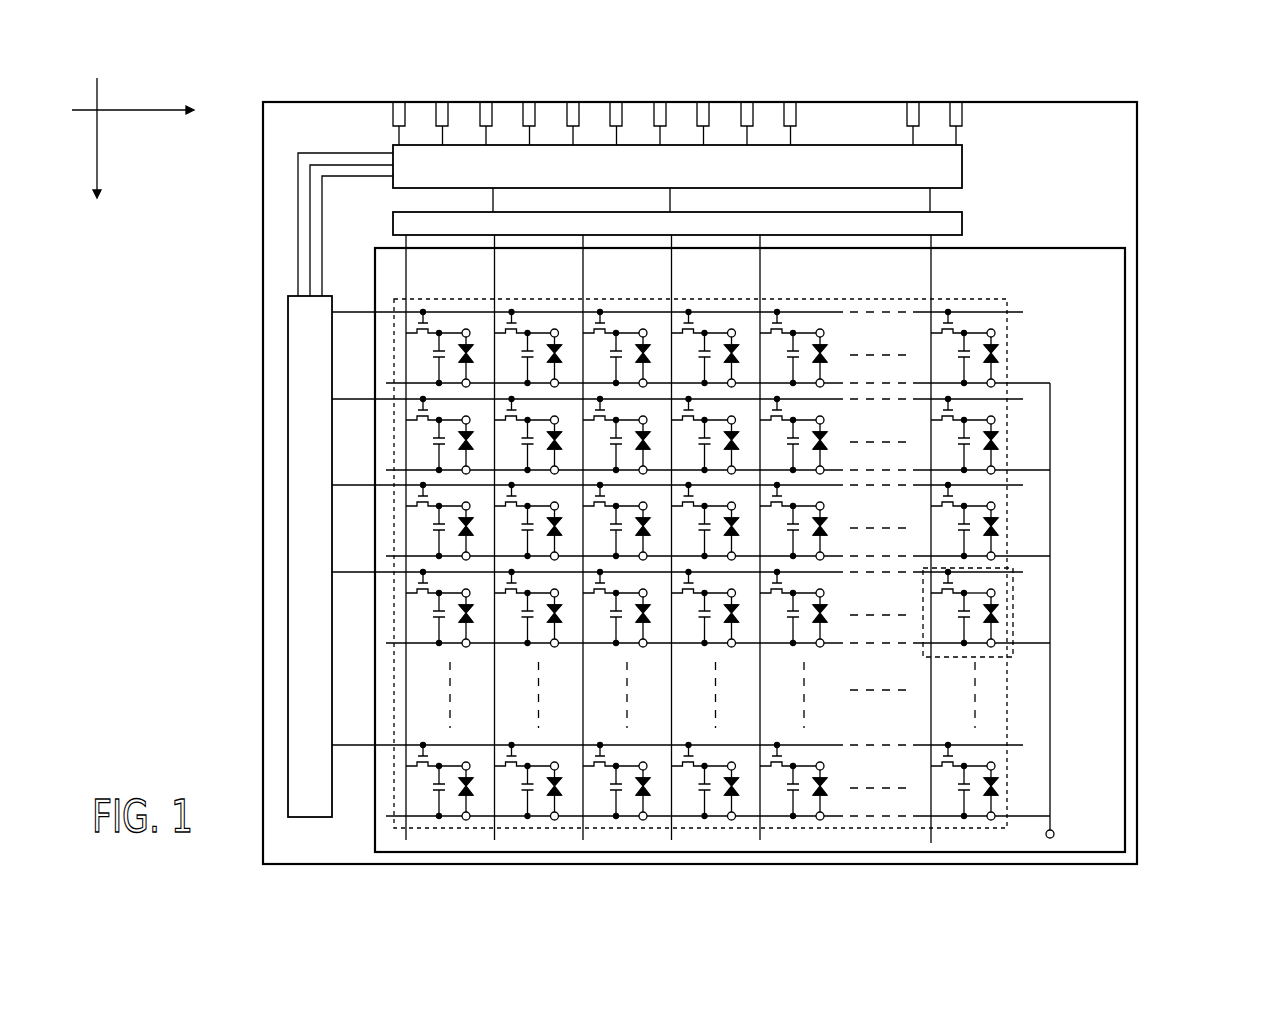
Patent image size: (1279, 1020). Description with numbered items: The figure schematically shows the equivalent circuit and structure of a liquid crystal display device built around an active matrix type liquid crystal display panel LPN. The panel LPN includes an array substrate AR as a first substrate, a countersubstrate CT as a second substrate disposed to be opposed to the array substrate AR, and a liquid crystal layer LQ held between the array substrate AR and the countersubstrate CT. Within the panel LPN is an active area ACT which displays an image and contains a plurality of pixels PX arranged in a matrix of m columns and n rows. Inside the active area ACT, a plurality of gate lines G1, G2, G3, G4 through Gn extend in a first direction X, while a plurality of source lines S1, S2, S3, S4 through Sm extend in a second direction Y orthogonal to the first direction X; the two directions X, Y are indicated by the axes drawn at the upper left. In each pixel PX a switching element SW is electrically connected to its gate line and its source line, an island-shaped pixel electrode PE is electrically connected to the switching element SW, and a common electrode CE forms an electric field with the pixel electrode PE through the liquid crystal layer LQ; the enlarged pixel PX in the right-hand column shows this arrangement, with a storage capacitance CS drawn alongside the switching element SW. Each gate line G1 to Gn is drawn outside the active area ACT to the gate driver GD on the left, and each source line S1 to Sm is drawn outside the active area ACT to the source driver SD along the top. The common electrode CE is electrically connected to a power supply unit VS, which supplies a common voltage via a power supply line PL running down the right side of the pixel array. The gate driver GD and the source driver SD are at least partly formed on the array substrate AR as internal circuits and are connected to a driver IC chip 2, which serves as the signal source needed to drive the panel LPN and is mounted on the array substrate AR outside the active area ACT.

The liquid crystal display panel LPN is at (1172, 138).
The array substrate AR is at (1113, 162).
The countersubstrate CT is at (1125, 287).
The driver IC chip 2 is at (962, 168).
The source driver SD is at (962, 224).
The gate driver GD is at (288, 676).
The active area ACT is at (1008, 420).
The gate line G1 is at (350, 312).
The gate line G2 is at (350, 399).
The gate line G3 is at (350, 485).
The gate line G4 is at (350, 572).
The gate line Gn is at (350, 745).
The source line S1 is at (407, 280).
The source line S2 is at (495, 280).
The source line S3 is at (584, 280).
The source line S4 is at (672, 280).
The source line Sm is at (932, 280).
The pixel PX is at (1013, 655).
The switching element SW is at (926, 591).
The storage capacitance CS is at (950, 620).
The pixel electrode PE is at (995, 593).
The liquid crystal layer LQ is at (999, 614).
The common electrode CE is at (995, 646).
The power supply line PL is at (1052, 775).
The power supply unit VS is at (1055, 834).
The first direction X is at (143, 111).
The second direction Y is at (96, 152).